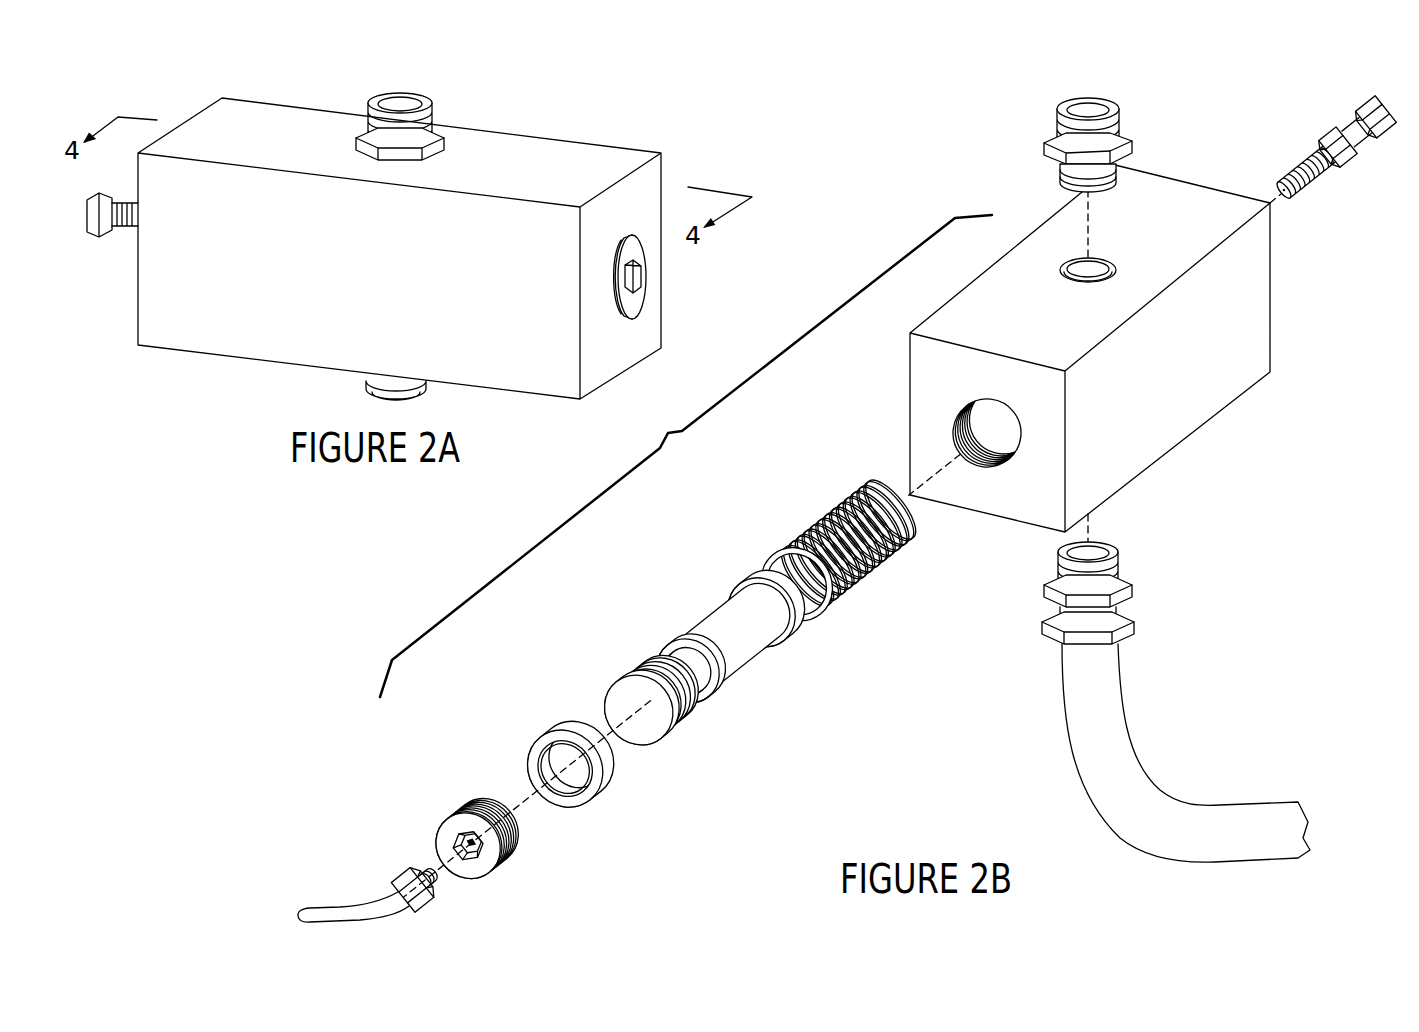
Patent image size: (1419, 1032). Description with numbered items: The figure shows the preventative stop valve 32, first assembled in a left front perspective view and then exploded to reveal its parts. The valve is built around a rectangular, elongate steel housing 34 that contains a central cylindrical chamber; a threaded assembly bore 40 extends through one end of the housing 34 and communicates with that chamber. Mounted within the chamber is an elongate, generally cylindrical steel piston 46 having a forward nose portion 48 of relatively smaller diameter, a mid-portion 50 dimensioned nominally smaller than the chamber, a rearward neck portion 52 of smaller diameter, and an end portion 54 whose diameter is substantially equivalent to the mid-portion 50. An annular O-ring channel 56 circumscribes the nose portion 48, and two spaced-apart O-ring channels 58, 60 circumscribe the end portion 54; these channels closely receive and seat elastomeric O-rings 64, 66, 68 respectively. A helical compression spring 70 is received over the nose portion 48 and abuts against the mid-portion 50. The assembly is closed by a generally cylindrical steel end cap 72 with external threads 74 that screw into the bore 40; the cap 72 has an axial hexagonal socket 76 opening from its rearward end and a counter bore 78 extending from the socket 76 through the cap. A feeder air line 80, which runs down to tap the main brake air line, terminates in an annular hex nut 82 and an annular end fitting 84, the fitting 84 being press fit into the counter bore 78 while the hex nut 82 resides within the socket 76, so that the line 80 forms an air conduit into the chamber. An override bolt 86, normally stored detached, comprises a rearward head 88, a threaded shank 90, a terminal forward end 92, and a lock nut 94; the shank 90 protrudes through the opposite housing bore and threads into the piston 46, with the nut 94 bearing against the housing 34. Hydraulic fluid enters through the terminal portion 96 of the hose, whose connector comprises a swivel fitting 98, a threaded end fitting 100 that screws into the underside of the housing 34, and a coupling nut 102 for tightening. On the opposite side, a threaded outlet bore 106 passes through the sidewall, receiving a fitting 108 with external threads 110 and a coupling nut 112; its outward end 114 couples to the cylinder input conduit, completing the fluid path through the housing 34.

In FIG. 2A, the stop valve 32 is at (396, 234).
In FIG. 2A, the housing 34 is at (215, 333).
In FIG. 2B, the housing 34 is at (1095, 369).
In FIG. 2B, the threaded assembly bore 40 is at (988, 456).
In FIG. 2B, the piston 46 is at (705, 655).
In FIG. 2B, the forward nose portion 48 is at (750, 607).
In FIG. 2B, the mid-portion 50 is at (706, 610).
In FIG. 2B, the rearward neck portion 52 is at (680, 660).
In FIG. 2B, the end portion 54 is at (657, 733).
In FIG. 2B, the annular O-ring channel 56 is at (778, 637).
In FIG. 2B, the O-ring channel 58 is at (630, 686).
In FIG. 2B, the O-ring channel 60 is at (643, 660).
In FIG. 2B, the O-ring 64 is at (772, 580).
In FIG. 2B, the O-ring 66 is at (586, 796).
In FIG. 2B, the O-ring 68 is at (578, 817).
In FIG. 2B, the helical compression spring 70 is at (882, 570).
In FIG. 2A, the end cap 72 is at (636, 300).
In FIG. 2B, the end cap 72 is at (477, 837).
In FIG. 2B, the external threads 74 is at (472, 805).
In FIG. 2B, the hexagonal socket 76 is at (466, 872).
In FIG. 2B, the counter bore 78 is at (456, 845).
In FIG. 2B, the feeder air line 80 is at (313, 907).
In FIG. 2B, the hex nut 82 is at (392, 870).
In FIG. 2B, the end fitting 84 is at (428, 876).
In FIG. 2A, the override bolt 86 is at (106, 224).
In FIG. 2B, the override bolt 86 is at (1315, 150).
In FIG. 2A, the head 88 is at (92, 236).
In FIG. 2B, the head 88 is at (1368, 105).
In FIG. 2A, the threaded shank 90 is at (123, 228).
In FIG. 2B, the threaded shank 90 is at (1303, 158).
In FIG. 2B, the terminal forward end 92 is at (1273, 190).
In FIG. 2B, the lock nut 94 is at (1338, 126).
In FIG. 2B, the terminal portion of hose 96 is at (1178, 812).
In FIG. 2B, the swivel fitting 98 is at (1129, 571).
In FIG. 2B, the threaded end fitting 100 is at (1120, 556).
In FIG. 2B, the coupling nut 102 is at (1135, 583).
In FIG. 2B, the threaded outlet bore 106 is at (1068, 263).
In FIG. 2B, the fitting 108 is at (1059, 126).
In FIG. 2A, the external threads 110 is at (432, 115).
In FIG. 2B, the external threads 110 is at (1118, 120).
In FIG. 2A, the coupling nut 112 is at (360, 137).
In FIG. 2B, the coupling nut 112 is at (1052, 152).
In FIG. 2A, the outward end 114 is at (410, 96).
In FIG. 2B, the outward end 114 is at (1080, 98).